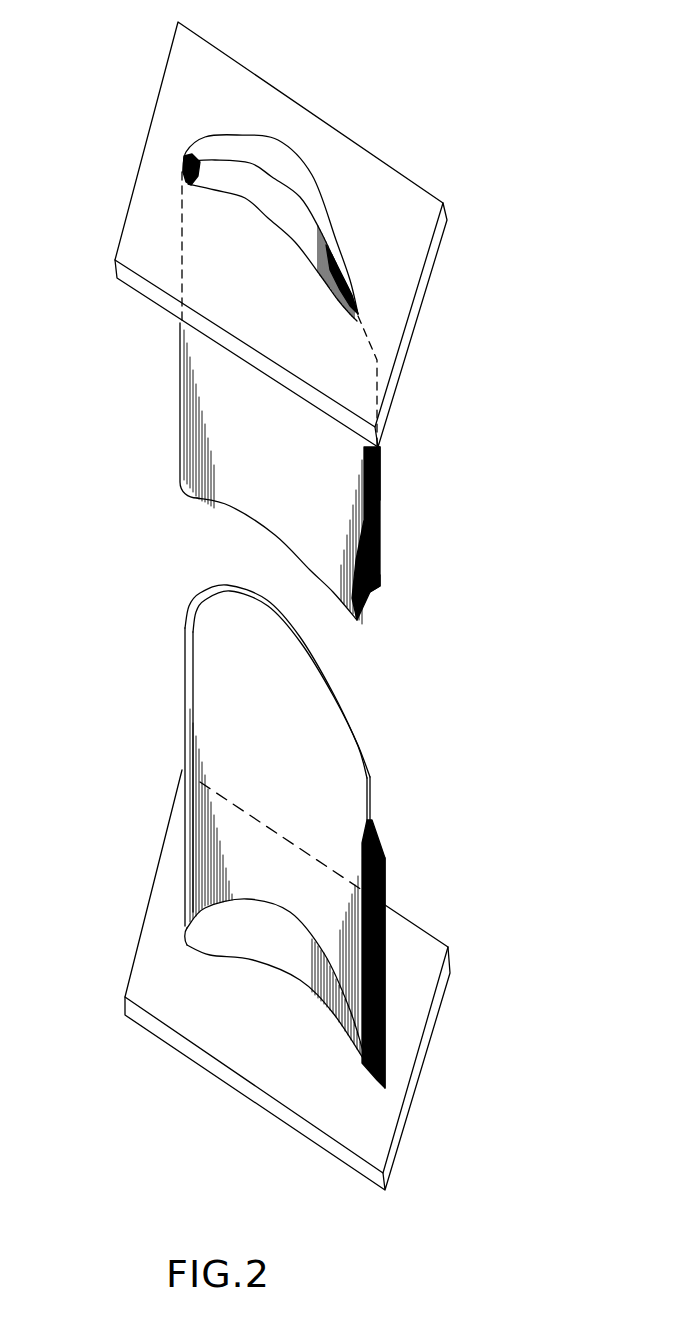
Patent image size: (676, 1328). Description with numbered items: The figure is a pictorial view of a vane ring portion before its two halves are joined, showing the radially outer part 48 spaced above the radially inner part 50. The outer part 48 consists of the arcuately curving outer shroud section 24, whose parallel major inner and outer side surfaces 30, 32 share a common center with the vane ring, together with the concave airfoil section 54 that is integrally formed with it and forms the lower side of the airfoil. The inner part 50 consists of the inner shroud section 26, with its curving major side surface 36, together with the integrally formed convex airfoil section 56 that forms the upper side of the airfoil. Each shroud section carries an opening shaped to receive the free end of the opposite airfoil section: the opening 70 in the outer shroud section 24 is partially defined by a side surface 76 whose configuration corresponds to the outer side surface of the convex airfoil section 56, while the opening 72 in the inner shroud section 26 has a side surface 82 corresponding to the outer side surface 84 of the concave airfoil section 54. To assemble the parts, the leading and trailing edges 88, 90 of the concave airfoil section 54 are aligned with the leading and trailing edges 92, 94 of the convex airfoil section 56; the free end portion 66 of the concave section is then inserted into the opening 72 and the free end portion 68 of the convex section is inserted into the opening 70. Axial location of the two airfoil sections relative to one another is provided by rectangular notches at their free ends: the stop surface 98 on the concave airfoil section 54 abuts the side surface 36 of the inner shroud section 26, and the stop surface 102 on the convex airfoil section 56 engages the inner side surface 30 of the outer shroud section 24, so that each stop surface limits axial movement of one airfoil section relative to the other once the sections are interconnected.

The outer shroud section 24 is at (452, 218).
The inner shroud section 26 is at (120, 977).
The inner side surface 30 is at (274, 386).
The outer side surface 32 is at (136, 208).
The outer major side surface 36 is at (388, 1130).
The outer part 48 is at (478, 360).
The inner part 50 is at (468, 942).
The concave airfoil section 54 is at (412, 565).
The convex airfoil section 56 is at (168, 685).
The free end portion 66 is at (197, 498).
The free end portion 68 is at (337, 694).
The opening 70 is at (247, 180).
The opening 72 is at (269, 949).
The side surface 76 is at (300, 213).
The side surface 82 is at (247, 958).
The outer side surface 84 is at (380, 517).
The leading edge 88 is at (183, 393).
The trailing edge 90 is at (383, 484).
The leading edge 92 is at (183, 768).
The trailing edge 94 is at (383, 898).
The stop surface 98 is at (372, 590).
The stop surface 102 is at (377, 841).